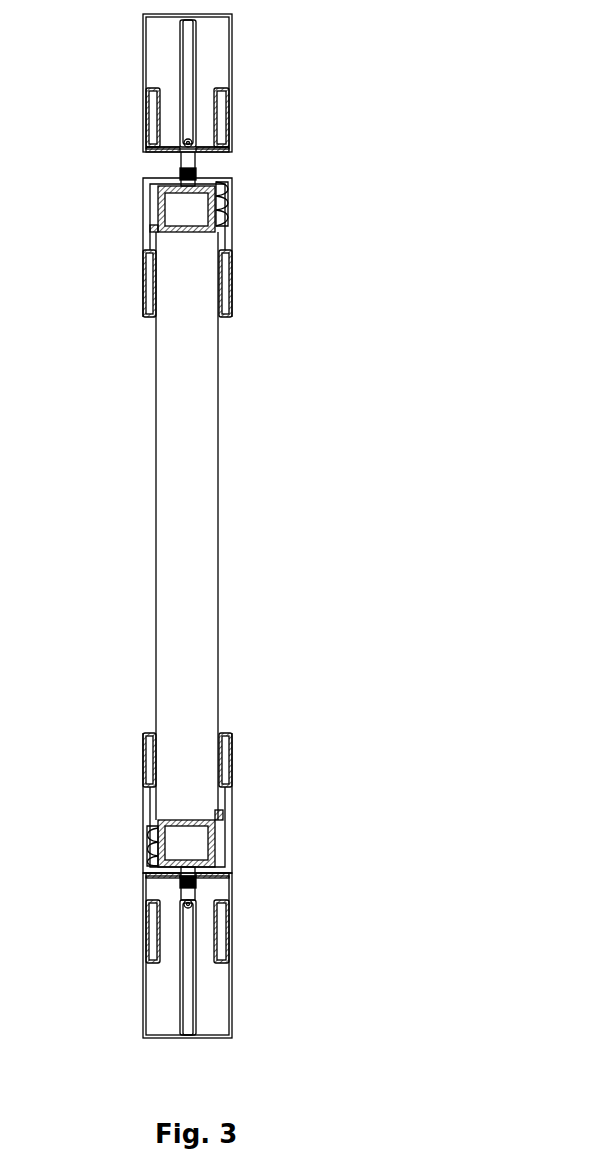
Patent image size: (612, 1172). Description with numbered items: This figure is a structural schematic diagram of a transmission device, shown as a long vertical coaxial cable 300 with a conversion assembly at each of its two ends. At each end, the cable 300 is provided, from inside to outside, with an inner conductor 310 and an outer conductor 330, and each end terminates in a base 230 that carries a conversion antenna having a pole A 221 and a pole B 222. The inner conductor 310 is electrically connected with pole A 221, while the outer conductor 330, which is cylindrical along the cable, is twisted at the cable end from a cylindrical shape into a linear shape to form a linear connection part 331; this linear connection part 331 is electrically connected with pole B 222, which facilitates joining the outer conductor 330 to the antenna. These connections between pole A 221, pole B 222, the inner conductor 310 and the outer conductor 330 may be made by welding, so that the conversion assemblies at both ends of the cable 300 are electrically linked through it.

The base 230 is at (222, 58).
The pole A 221 is at (153, 118).
The inner conductor 310 is at (180, 168).
The pole B 222 is at (234, 232).
The outer conductor 330 is at (230, 222).
The linear connection part 331 is at (225, 200).
The coaxial cable 300 is at (196, 518).